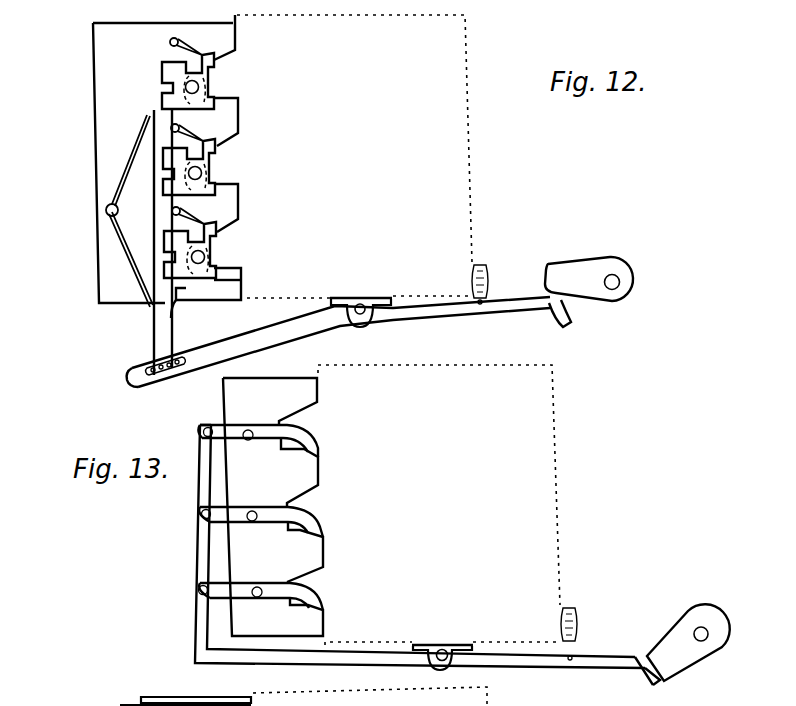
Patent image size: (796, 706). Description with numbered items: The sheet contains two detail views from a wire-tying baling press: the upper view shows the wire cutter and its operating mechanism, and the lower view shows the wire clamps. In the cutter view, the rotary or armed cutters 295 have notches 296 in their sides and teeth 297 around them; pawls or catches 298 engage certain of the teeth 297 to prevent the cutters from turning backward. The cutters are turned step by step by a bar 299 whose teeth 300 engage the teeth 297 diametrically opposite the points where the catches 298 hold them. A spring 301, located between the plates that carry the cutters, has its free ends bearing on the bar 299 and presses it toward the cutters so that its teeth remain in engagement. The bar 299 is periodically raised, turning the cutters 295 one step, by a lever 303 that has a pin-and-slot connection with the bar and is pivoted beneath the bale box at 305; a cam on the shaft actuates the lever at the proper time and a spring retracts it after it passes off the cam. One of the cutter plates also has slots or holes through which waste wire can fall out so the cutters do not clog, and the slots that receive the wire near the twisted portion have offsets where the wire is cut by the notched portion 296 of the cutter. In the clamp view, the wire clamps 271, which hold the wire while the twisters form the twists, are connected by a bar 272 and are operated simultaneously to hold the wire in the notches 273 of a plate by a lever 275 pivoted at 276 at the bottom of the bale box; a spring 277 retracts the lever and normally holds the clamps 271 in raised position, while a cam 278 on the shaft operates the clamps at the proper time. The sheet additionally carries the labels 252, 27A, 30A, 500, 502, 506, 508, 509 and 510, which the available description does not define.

In FIG. 12, the pivot pin 252 is at (620, 281).
In FIG. 13, the pivot pin 252 is at (707, 627).
In FIG. 13, the wire clamps 271 is at (238, 585).
In FIG. 13, the bar 272 is at (202, 547).
In FIG. 13, the notches 273 is at (338, 654).
In FIG. 13, the lever 275 is at (300, 582).
In FIG. 13, the pivot 276 is at (452, 670).
In FIG. 13, the spring 277 is at (575, 637).
In FIG. 13, the cam 278 is at (683, 662).
In FIG. 13, the upper arm 27A is at (258, 454).
In FIG. 12, the rotary cutters 295 is at (238, 112).
In FIG. 12, the notches 296 is at (228, 240).
In FIG. 12, the teeth 297 is at (162, 110).
In FIG. 12, the pawls 298 is at (178, 42).
In FIG. 12, the bar 299 is at (154, 333).
In FIG. 12, the teeth 300 is at (240, 200).
In FIG. 12, the spring 301 is at (130, 253).
In FIG. 12, the slide 30A is at (145, 378).
In FIG. 12, the lever 303 is at (297, 337).
In FIG. 12, the pivot 305 is at (362, 328).
In FIG. 12, the hook 506 is at (610, 301).
In FIG. 12, the pawl 508 is at (243, 189).
In FIG. 12, the block 509 is at (226, 74).
In FIG. 12, the reference line 510 is at (236, 182).
In FIG. 12, the foot 502 is at (238, 283).
In FIG. 12, the stop 500 is at (188, 305).